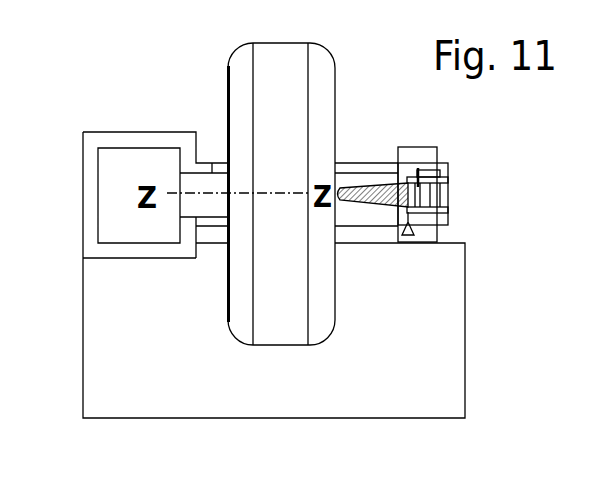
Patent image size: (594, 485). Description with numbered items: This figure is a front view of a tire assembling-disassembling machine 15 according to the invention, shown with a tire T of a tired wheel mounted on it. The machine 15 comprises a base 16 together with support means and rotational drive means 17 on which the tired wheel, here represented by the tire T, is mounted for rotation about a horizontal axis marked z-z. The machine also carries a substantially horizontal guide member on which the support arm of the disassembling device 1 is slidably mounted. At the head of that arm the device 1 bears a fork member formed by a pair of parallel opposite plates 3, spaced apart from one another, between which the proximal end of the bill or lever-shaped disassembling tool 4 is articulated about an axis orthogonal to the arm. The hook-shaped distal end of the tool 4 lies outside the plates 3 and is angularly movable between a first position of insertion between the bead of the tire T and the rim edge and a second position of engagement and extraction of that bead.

The disassembling device 1 is at (432, 214).
The parallel opposite plates 3 is at (449, 181).
The disassembling tool 4 is at (375, 208).
The tire assembling-disassembling machine 15 is at (352, 156).
The base 16 is at (83, 407).
The rotational drive means 17 is at (210, 163).
The tire T is at (232, 54).